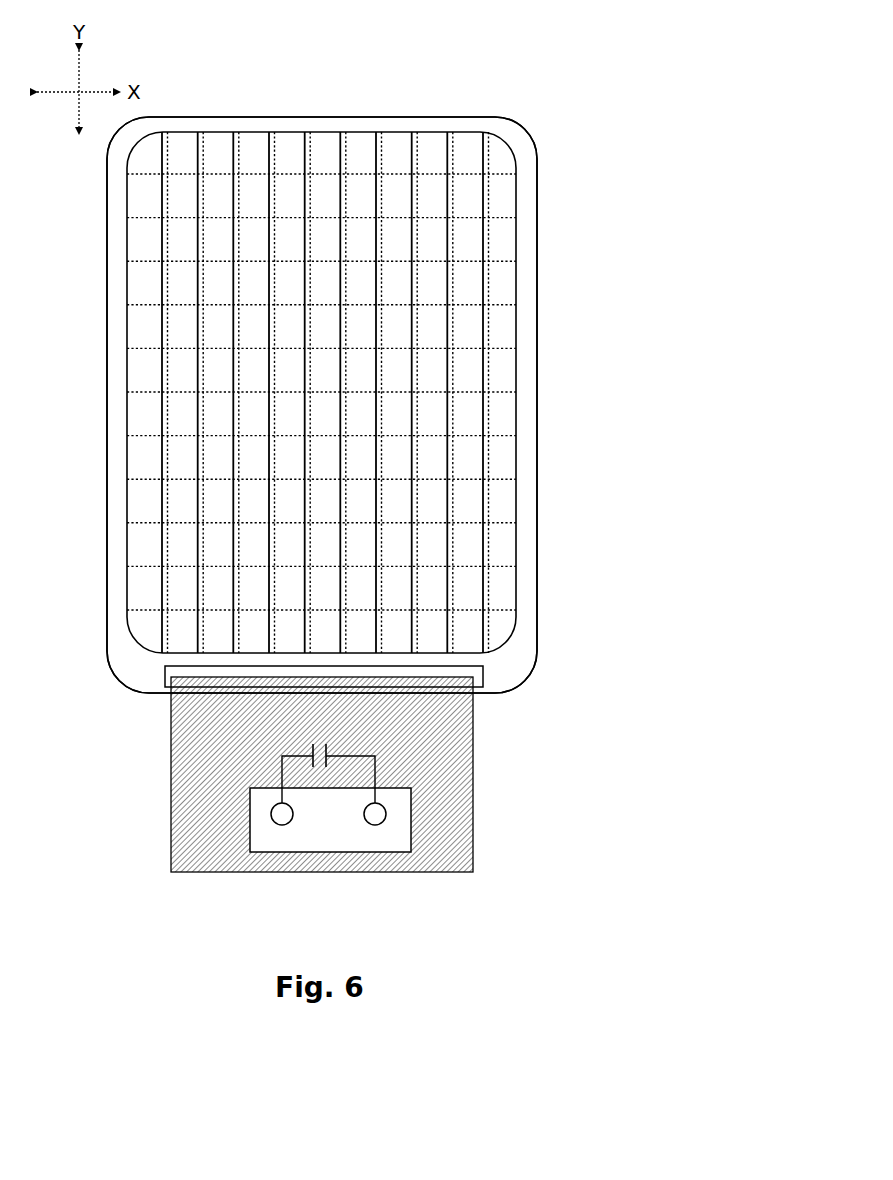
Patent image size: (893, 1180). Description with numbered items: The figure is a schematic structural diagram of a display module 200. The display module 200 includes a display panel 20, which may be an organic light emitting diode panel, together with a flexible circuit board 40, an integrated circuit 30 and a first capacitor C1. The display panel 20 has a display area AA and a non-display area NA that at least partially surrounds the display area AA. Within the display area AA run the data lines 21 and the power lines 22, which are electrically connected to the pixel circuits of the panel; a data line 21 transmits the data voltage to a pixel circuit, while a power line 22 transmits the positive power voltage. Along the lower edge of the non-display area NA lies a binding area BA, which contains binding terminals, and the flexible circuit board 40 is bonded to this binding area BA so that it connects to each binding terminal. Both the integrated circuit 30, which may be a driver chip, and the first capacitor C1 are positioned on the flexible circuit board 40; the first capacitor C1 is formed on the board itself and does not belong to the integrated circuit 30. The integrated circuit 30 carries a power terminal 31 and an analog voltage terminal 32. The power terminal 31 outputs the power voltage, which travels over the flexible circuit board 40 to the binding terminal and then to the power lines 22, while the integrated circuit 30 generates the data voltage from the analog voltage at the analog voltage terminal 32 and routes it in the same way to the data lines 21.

The display panel 20 is at (537, 534).
The data lines 21 is at (305, 147).
The power lines 22 is at (364, 172).
The display area AA is at (503, 618).
The non-display area NA is at (518, 662).
The binding area BA is at (485, 678).
The integrated circuit 30 is at (417, 826).
The power terminal 31 is at (283, 824).
The analog voltage terminal 32 is at (376, 824).
The flexible circuit board 40 is at (473, 781).
The first capacitor C1 is at (328, 763).
The display module 200 is at (546, 956).